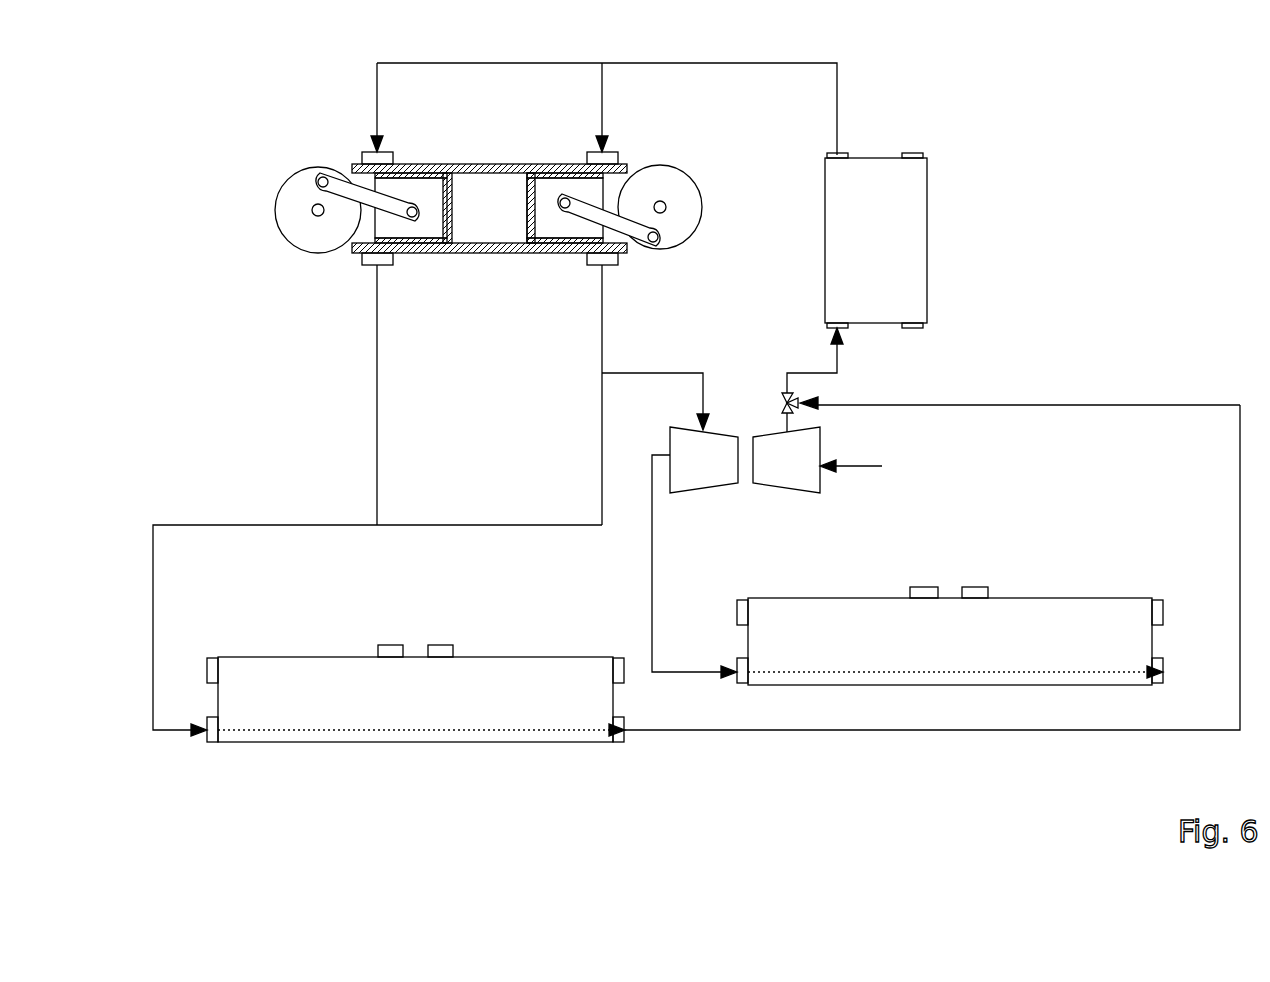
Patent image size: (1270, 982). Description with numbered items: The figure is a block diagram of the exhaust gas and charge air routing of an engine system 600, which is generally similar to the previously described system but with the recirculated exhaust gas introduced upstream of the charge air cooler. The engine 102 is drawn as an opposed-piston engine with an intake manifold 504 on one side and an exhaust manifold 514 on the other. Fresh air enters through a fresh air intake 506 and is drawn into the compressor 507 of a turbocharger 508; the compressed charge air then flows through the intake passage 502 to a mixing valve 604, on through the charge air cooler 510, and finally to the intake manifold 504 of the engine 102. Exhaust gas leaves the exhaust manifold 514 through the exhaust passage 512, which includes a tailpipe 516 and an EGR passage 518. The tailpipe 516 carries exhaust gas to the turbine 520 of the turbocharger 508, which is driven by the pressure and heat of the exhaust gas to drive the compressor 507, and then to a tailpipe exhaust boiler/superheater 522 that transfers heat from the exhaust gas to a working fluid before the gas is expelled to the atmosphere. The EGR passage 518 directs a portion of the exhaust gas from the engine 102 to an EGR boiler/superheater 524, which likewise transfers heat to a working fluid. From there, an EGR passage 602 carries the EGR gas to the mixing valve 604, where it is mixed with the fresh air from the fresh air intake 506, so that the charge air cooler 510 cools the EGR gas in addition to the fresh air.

The engine system 600 is at (1175, 158).
The engine 102 is at (360, 162).
The intake passage 502 is at (837, 92).
The intake manifold 504 is at (587, 157).
The exhaust manifold 514 is at (587, 257).
The exhaust passage 512 is at (603, 327).
The EGR passage 518 is at (212, 525).
The turbocharger 508 is at (744, 488).
The turbine 520 is at (704, 460).
The compressor 507 is at (786, 460).
The fresh air intake 506 is at (908, 474).
The mixing valve 604 is at (783, 398).
The EGR passage 602 is at (1192, 403).
The charge air cooler 510 is at (876, 240).
The tailpipe 516 is at (645, 598).
The tailpipe exhaust boiler/superheater 522 is at (950, 636).
The EGR boiler/superheater 524 is at (437, 734).